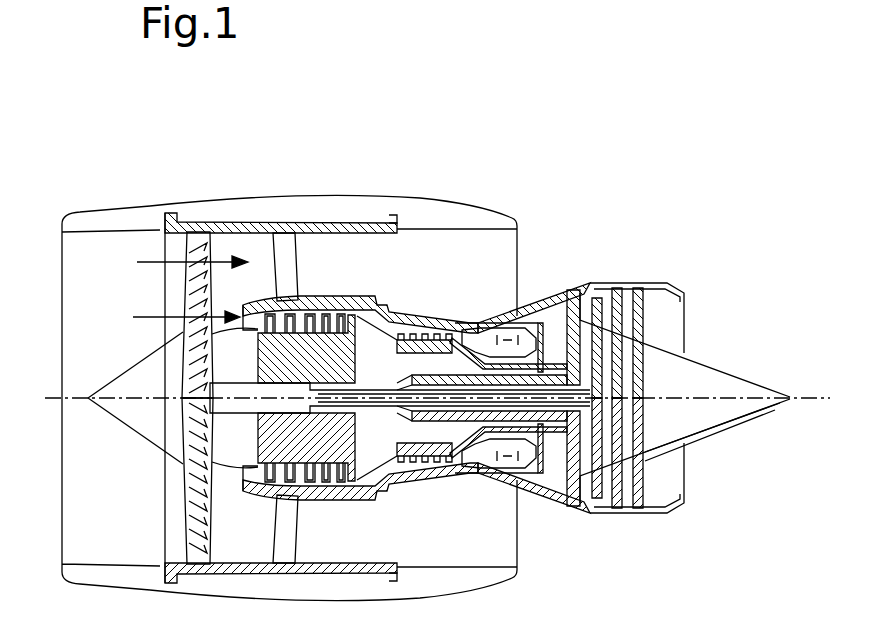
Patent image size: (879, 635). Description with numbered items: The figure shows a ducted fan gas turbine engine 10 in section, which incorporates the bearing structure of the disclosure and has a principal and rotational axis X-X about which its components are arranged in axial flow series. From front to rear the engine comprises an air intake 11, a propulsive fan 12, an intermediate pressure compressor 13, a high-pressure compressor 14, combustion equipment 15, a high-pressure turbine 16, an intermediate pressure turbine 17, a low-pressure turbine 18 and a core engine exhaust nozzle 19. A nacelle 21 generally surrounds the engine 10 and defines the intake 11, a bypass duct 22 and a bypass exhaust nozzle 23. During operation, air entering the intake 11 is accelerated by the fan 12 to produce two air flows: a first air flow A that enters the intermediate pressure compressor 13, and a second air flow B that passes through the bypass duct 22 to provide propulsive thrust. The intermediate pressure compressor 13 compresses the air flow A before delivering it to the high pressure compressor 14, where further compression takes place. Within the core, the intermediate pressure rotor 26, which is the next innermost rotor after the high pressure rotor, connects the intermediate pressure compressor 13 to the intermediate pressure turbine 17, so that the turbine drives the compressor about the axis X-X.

The ducted fan gas turbine engine 10 is at (132, 174).
The air intake 11 is at (112, 233).
The propulsive fan 12 is at (188, 518).
The intermediate pressure compressor 13 is at (318, 482).
The high-pressure compressor 14 is at (427, 338).
The combustion equipment 15 is at (482, 463).
The high-pressure turbine 16 is at (533, 474).
The intermediate pressure turbine 17 is at (566, 304).
The low-pressure turbine 18 is at (594, 507).
The core engine exhaust nozzle 19 is at (684, 291).
The nacelle 21 is at (292, 207).
The bypass duct 22 is at (488, 268).
The bypass exhaust nozzle 23 is at (518, 224).
The intermediate pressure rotor 26 is at (605, 288).
The first air flow A is at (175, 318).
The second air flow B is at (180, 265).
The principal and rotational axis X is at (434, 399).